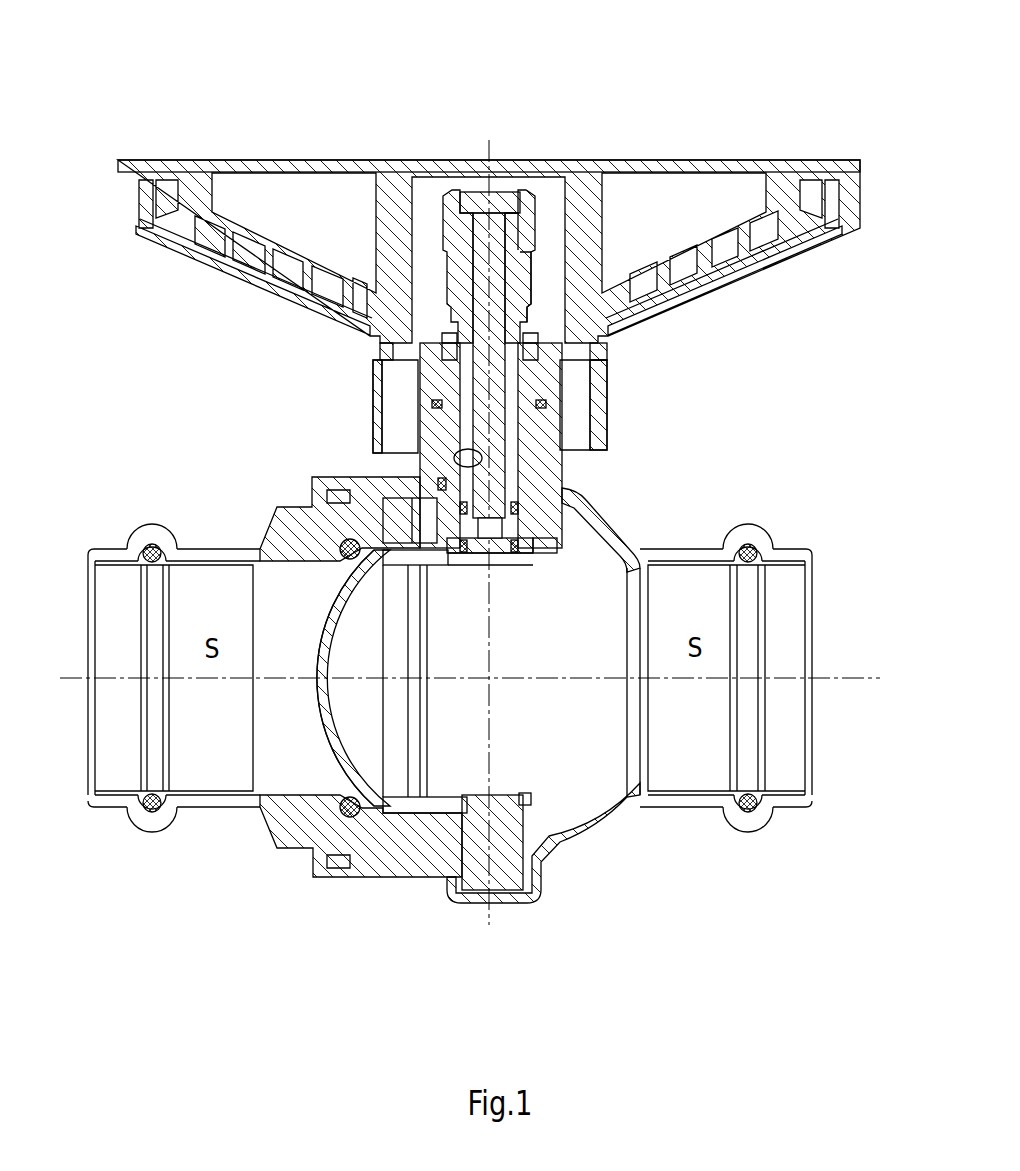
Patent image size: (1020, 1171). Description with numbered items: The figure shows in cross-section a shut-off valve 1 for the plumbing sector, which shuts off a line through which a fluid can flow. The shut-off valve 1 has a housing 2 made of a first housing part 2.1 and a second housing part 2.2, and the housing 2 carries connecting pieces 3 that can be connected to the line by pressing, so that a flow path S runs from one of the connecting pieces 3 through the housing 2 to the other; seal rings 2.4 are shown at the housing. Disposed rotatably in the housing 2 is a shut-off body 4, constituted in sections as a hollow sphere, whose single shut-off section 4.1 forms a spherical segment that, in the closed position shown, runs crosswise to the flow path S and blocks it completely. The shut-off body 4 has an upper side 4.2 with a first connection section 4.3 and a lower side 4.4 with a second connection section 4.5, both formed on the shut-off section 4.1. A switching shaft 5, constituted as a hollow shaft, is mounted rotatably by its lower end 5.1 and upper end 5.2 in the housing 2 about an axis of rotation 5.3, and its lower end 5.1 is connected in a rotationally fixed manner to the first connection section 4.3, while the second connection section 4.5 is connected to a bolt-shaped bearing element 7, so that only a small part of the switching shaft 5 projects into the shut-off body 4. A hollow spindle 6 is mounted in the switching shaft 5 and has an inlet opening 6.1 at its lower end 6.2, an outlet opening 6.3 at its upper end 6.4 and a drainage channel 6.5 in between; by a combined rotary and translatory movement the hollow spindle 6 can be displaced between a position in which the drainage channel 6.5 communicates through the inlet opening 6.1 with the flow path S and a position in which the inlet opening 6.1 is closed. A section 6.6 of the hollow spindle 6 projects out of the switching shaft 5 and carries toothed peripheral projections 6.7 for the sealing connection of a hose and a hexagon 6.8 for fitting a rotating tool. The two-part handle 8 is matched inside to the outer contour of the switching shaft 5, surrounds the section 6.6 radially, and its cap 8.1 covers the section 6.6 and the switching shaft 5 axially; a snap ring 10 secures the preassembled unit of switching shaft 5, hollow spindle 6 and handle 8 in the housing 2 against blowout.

The shut-off valve 1 is at (140, 85).
The housing 2 is at (683, 507).
The first housing part 2.1 is at (300, 830).
The second housing part 2.2 is at (593, 833).
The seal ring 2.4 is at (352, 567).
The connecting pieces 3 is at (110, 532).
The shut-off body 4 is at (327, 753).
The shut-off section 4.1 is at (328, 723).
The upper side 4.2 is at (548, 555).
The first connection section 4.3 is at (430, 567).
The lower side 4.4 is at (525, 800).
The second connection section 4.5 is at (445, 810).
The switching shaft 5 is at (425, 418).
The lower end 5.1 is at (530, 568).
The upper end 5.2 is at (572, 323).
The axis of rotation 5.3 is at (492, 427).
The hollow spindle 6 is at (437, 267).
The inlet opening 6.1 is at (489, 540).
The lower end 6.2 is at (500, 568).
The outlet opening 6.3 is at (478, 198).
The upper end 6.4 is at (520, 195).
The drainage channel 6.5 is at (470, 460).
The section 6.6 is at (445, 240).
The toothed peripheral projections 6.7 is at (537, 250).
The hexagon 6.8 is at (535, 287).
The bolt-shaped bearing element 7 is at (500, 863).
The handle 8 is at (170, 274).
The cap 8.1 is at (686, 166).
The snap ring 10 is at (548, 404).